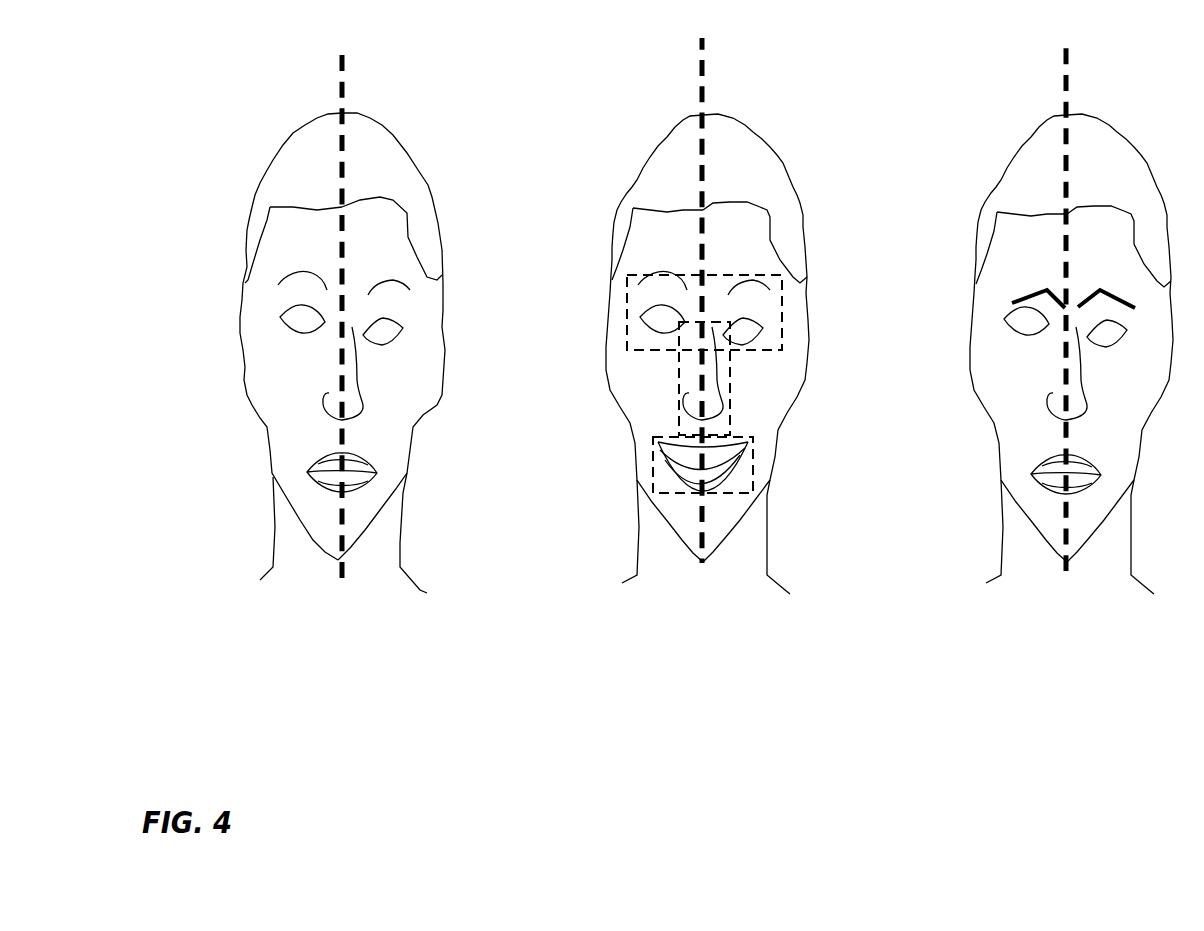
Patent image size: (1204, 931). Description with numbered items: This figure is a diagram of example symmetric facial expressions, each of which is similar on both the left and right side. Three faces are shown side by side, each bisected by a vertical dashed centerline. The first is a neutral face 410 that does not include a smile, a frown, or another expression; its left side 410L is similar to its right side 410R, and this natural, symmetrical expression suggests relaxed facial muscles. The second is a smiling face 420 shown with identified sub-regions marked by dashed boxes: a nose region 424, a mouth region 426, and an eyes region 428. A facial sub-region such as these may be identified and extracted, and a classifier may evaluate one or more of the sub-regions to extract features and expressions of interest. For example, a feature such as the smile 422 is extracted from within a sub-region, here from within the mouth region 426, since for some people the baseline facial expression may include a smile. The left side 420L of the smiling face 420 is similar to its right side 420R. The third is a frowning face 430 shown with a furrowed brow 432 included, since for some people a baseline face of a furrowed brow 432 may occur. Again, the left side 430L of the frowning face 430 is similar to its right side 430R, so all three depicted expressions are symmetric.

The neutral face 410 is at (323, 369).
The left side 410L is at (300, 158).
The right side 410R is at (372, 148).
The smiling face 420 is at (718, 360).
The left side 420L is at (678, 128).
The right side 420R is at (733, 133).
The smile 422 is at (730, 480).
The nose region 424 is at (730, 425).
The mouth region 426 is at (670, 430).
The eyes region 428 is at (695, 273).
The frowning face 430 is at (1061, 366).
The left side 430L is at (1043, 137).
The right side 430R is at (1097, 140).
The furrowed brow 432 is at (1058, 296).